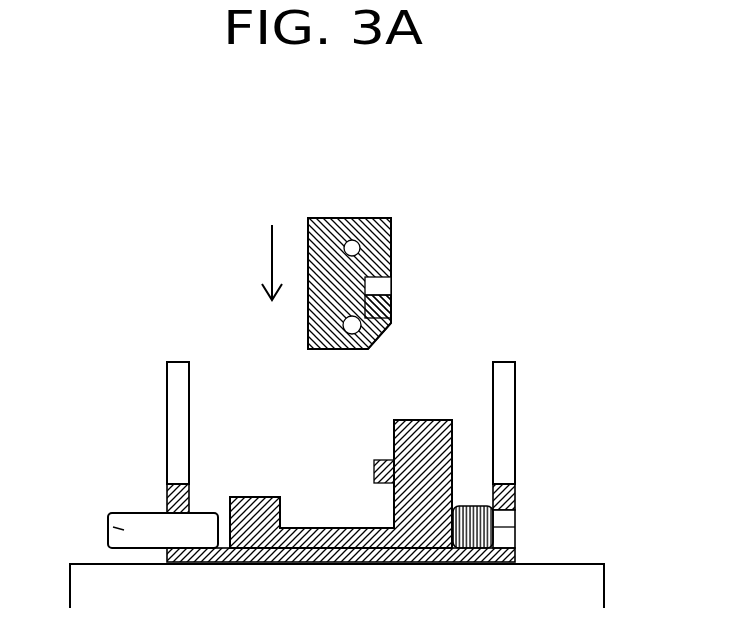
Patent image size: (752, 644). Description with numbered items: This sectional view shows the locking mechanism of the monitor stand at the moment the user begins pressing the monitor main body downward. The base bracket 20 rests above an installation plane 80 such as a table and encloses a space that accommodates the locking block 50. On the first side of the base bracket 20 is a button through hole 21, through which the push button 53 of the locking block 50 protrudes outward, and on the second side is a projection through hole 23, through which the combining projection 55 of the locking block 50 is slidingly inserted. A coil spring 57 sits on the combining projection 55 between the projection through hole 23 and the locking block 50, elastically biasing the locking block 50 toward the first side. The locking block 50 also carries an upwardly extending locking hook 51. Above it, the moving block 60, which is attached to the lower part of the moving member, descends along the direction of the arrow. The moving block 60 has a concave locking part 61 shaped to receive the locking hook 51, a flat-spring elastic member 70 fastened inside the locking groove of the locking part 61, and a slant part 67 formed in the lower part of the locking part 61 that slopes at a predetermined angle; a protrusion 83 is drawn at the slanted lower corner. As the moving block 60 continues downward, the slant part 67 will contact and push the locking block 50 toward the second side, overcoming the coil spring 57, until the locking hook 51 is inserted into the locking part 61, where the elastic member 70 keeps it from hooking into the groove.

The moving block 60 is at (346, 212).
The locking part 61 is at (391, 286).
The elastic member 70 is at (391, 301).
The protrusion 83 is at (375, 340).
The slant part 67 is at (366, 348).
The locking block 50 is at (434, 412).
The locking hook 51 is at (375, 462).
The base bracket 20 is at (173, 405).
The button through hole 21 is at (168, 518).
The projection through hole 23 is at (518, 518).
The push button 53 is at (108, 530).
The combining projection 55 is at (516, 527).
The coil spring 57 is at (486, 563).
The installation plane 80 is at (598, 578).